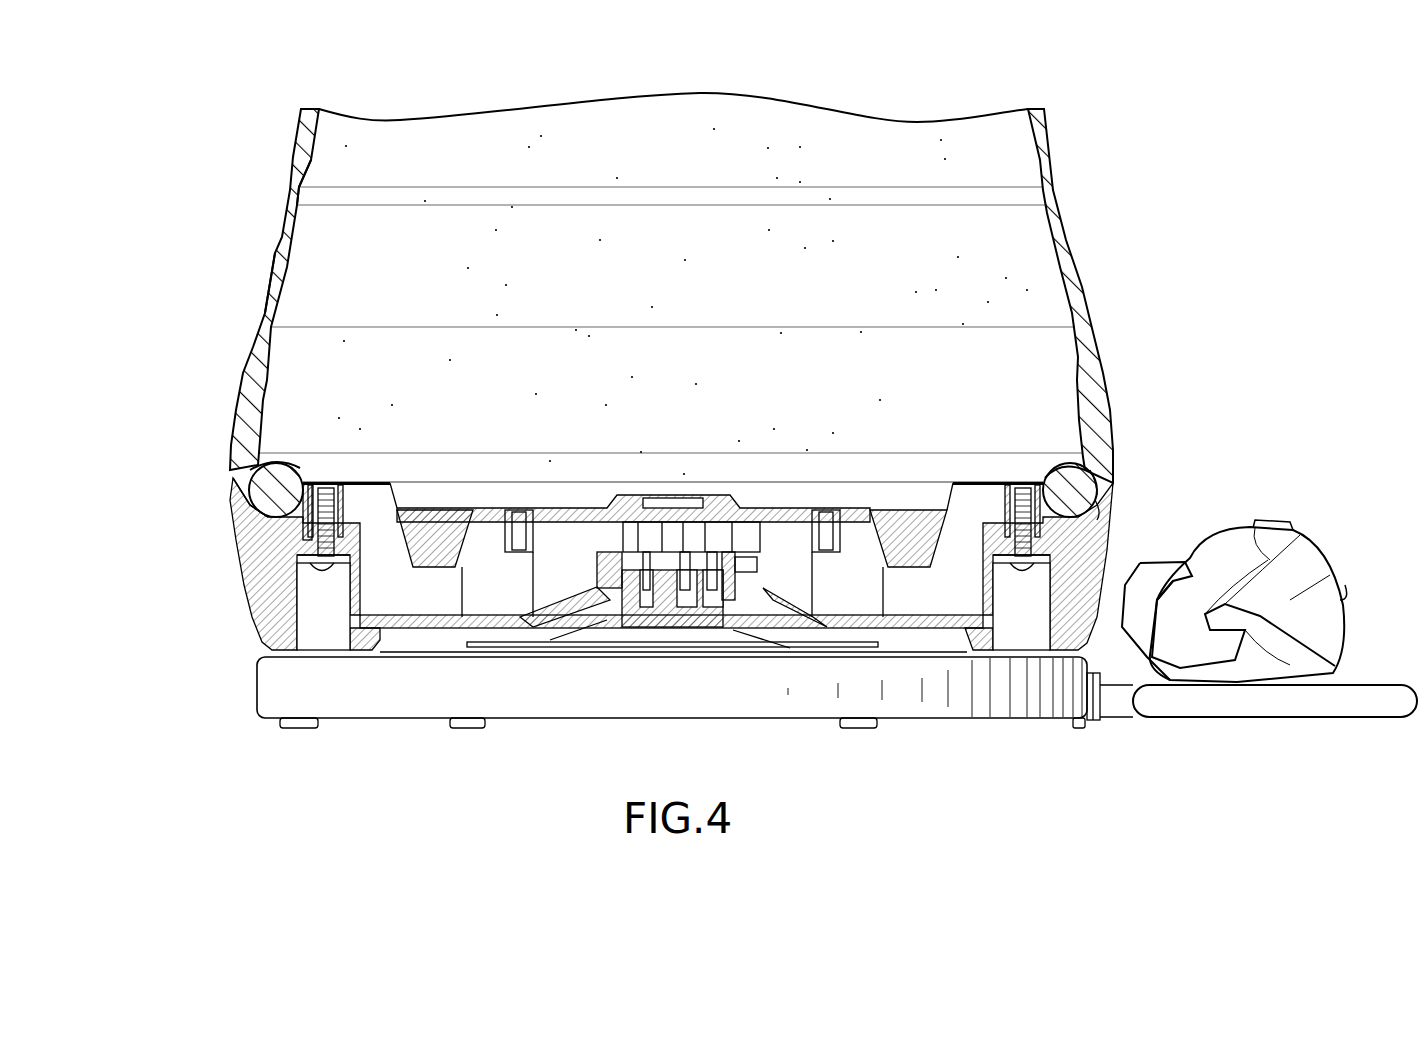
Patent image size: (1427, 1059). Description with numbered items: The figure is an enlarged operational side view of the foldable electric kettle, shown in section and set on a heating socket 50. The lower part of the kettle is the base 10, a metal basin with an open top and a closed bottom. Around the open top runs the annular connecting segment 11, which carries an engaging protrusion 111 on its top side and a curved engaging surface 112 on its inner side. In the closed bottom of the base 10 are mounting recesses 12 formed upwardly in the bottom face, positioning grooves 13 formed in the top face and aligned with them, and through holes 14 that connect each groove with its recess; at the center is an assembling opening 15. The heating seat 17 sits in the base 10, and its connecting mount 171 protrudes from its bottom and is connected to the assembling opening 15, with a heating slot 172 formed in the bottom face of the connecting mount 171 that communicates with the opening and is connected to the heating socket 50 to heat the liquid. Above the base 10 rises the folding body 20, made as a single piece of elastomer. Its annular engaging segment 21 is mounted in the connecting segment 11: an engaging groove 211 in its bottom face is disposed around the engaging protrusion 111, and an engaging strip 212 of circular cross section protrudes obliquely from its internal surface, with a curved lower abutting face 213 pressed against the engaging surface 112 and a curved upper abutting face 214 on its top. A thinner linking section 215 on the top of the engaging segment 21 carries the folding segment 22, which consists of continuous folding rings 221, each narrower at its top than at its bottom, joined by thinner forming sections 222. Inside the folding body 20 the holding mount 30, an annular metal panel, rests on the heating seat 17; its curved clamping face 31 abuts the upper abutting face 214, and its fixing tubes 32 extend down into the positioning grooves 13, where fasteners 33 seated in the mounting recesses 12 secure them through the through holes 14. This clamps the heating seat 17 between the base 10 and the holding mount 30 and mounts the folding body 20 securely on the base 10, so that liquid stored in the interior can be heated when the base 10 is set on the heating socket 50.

The base 10 is at (212, 624).
The connecting segment 11 is at (231, 495).
The engaging protrusion 111 is at (1113, 450).
The engaging surface 112 is at (263, 517).
The mounting recesses 12 is at (350, 622).
The positioning grooves 13 is at (322, 530).
The through holes 14 is at (318, 565).
The assembling opening 15 is at (630, 590).
The heating seat 17 is at (908, 563).
The connecting mount 171 is at (730, 573).
The heating slot 172 is at (657, 557).
The folding body 20 is at (212, 258).
The engaging segment 21 is at (243, 382).
The engaging groove 211 is at (1105, 478).
The engaging strip 212 is at (275, 477).
The lower abutting face 213 is at (1100, 507).
The upper abutting face 214 is at (1067, 462).
The linking section 215 is at (265, 320).
The folding segment 22 is at (288, 260).
The folding rings 221 is at (307, 130).
The forming sections 222 is at (300, 192).
The holding mount 30 is at (722, 492).
The clamping face 31 is at (287, 463).
The fixing tubes 32 is at (1007, 500).
The fasteners 33 is at (1017, 567).
The heating socket 50 is at (930, 731).